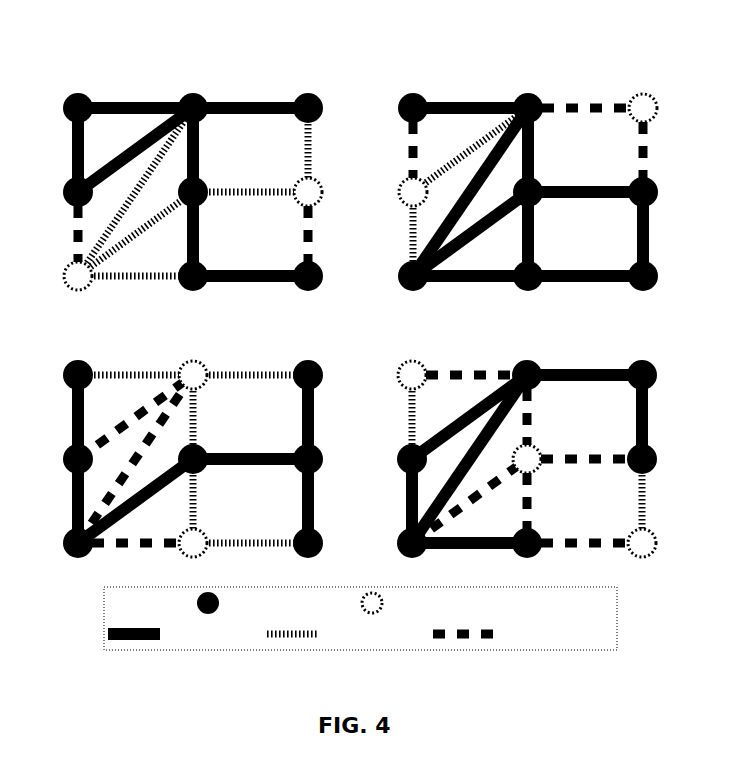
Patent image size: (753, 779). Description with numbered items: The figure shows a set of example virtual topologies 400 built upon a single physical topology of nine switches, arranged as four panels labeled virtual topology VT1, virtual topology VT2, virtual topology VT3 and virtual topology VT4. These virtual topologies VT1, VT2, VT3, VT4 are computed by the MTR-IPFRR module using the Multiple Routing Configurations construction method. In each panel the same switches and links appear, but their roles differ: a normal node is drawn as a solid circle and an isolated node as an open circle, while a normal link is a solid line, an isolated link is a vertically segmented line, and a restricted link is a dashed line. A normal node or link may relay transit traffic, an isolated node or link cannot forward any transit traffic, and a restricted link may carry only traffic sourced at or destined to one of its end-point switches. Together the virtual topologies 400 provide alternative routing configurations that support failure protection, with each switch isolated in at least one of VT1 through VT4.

The example virtual topologies 400 is at (119, 38).
The virtual topology VT1 is at (194, 188).
The virtual topology VT2 is at (529, 188).
The virtual topology VT3 is at (194, 456).
The virtual topology VT4 is at (528, 456).